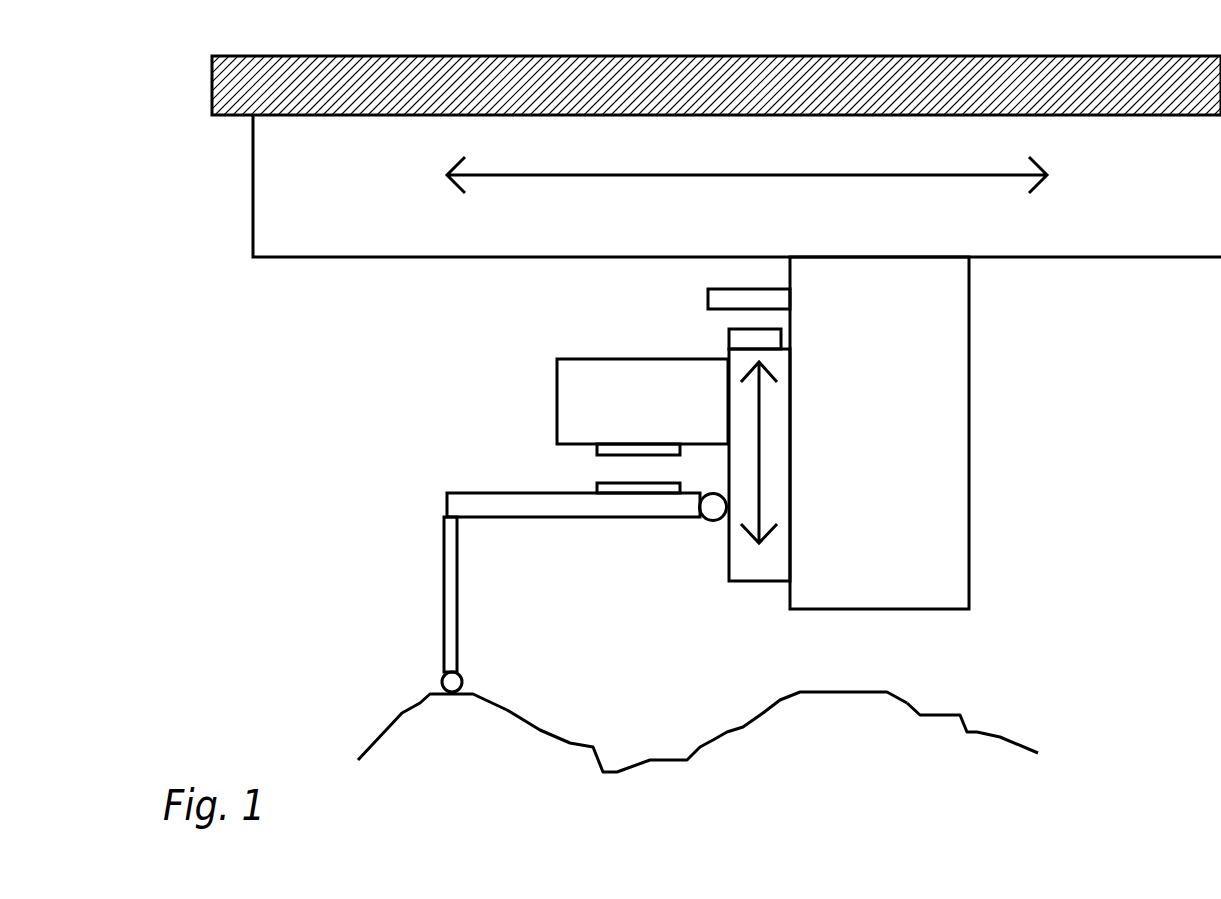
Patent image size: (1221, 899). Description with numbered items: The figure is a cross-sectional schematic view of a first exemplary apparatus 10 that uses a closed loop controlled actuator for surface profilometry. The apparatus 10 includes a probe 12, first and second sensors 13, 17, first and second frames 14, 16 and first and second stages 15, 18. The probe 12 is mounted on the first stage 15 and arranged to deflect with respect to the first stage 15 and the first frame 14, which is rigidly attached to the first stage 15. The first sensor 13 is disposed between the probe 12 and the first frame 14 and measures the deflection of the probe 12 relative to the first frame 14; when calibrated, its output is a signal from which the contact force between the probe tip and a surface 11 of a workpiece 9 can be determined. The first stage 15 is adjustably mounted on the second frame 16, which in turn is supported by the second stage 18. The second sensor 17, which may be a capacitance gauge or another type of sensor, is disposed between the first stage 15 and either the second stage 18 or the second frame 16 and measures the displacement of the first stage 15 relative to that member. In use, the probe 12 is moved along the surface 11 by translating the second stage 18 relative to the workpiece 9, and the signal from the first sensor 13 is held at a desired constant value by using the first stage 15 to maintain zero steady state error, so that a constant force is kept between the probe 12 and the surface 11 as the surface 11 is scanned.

The second stage 18 is at (373, 215).
The second sensor 17 is at (727, 328).
The second frame 16 is at (917, 378).
The first stage 15 is at (773, 495).
The first frame 14 is at (584, 412).
The first sensor 13 is at (597, 483).
The probe 12 is at (443, 637).
The surface 11 is at (920, 712).
The apparatus 10 is at (183, 668).
The workpiece 9 is at (902, 747).